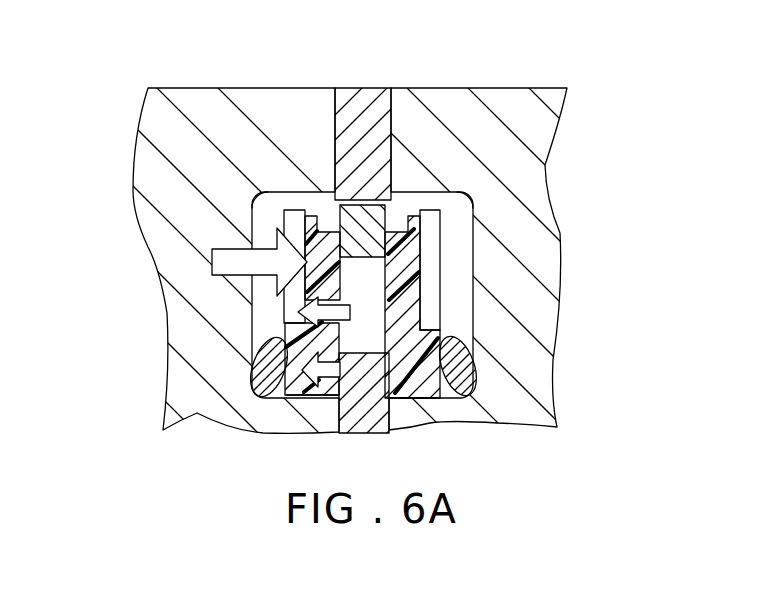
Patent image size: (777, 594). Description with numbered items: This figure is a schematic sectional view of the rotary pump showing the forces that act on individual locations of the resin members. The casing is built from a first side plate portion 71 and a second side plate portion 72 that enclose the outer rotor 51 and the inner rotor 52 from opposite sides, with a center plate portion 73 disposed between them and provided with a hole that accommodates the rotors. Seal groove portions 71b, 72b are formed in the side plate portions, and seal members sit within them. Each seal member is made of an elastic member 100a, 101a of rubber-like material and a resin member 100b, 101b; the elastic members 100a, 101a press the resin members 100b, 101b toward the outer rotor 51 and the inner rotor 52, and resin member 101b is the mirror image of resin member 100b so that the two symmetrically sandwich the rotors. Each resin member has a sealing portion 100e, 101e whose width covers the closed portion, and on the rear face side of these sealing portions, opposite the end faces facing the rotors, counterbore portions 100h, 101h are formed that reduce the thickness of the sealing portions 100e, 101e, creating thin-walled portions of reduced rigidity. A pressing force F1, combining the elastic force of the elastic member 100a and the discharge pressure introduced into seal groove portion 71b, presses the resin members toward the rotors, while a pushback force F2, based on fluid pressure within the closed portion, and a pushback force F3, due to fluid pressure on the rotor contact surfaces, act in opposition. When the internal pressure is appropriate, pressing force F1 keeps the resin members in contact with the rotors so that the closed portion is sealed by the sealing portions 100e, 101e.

The first side plate portion 71 is at (237, 77).
The second side plate portion 72 is at (525, 77).
The center plate portion 73 is at (369, 79).
The seal groove portion 71b is at (255, 198).
The seal groove portion 72b is at (474, 208).
The outer rotor 51 is at (373, 206).
The inner rotor 52 is at (380, 420).
The counterbore portion 100h is at (293, 220).
The sealing portion 100e is at (295, 343).
The elastic member 100a is at (266, 365).
The resin member 100b is at (298, 395).
The counterbore portion 101h is at (442, 238).
The sealing portion 101e is at (428, 300).
The elastic member 101a is at (461, 352).
The resin member 101b is at (436, 388).
The pressing force F1 is at (201, 262).
The pushback force F2 is at (340, 298).
The pushback force F3 is at (334, 350).